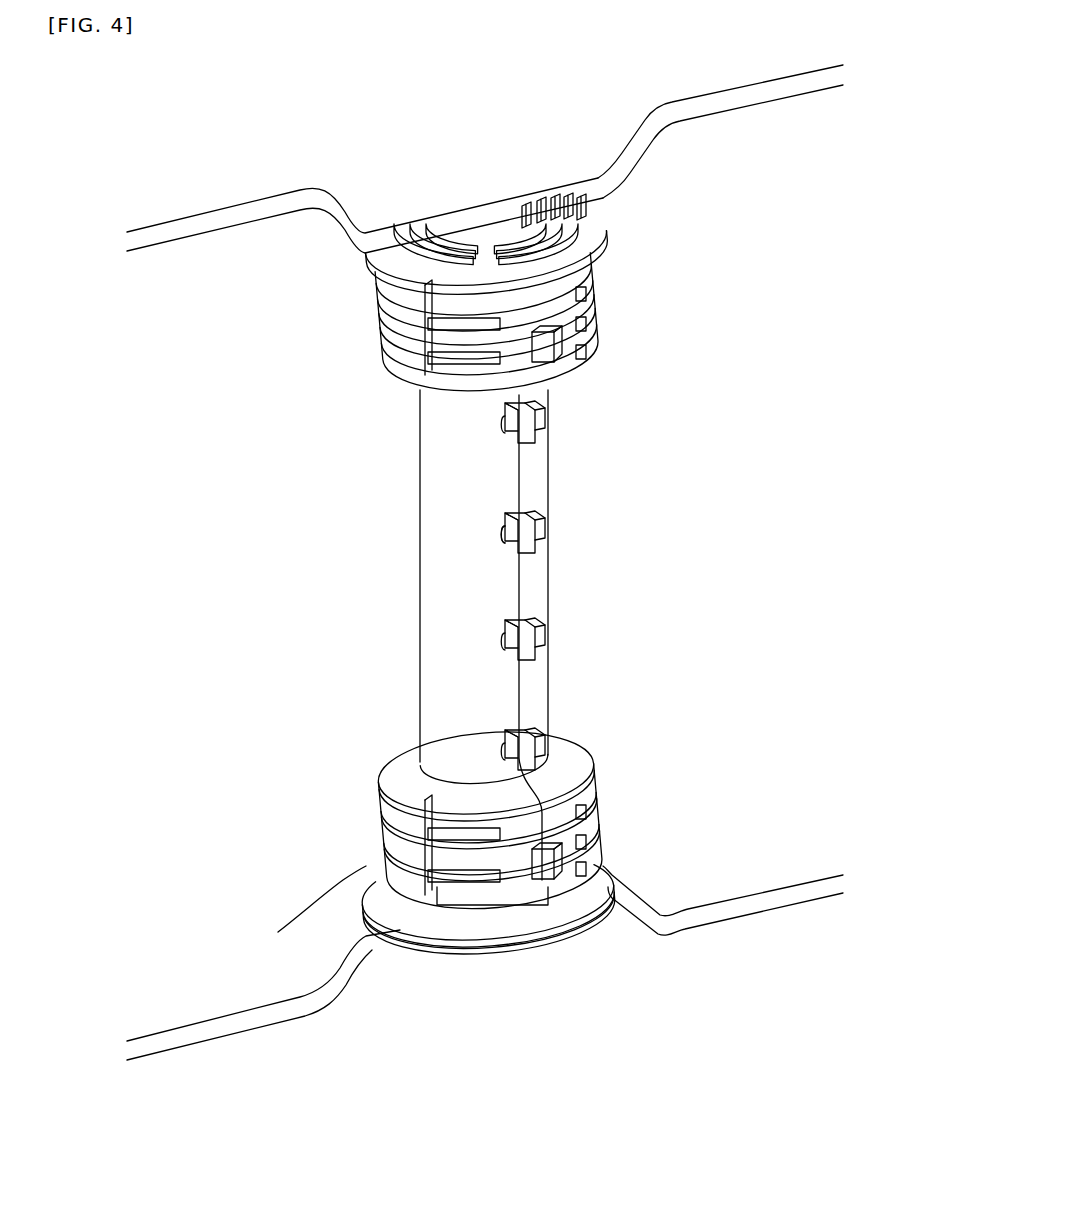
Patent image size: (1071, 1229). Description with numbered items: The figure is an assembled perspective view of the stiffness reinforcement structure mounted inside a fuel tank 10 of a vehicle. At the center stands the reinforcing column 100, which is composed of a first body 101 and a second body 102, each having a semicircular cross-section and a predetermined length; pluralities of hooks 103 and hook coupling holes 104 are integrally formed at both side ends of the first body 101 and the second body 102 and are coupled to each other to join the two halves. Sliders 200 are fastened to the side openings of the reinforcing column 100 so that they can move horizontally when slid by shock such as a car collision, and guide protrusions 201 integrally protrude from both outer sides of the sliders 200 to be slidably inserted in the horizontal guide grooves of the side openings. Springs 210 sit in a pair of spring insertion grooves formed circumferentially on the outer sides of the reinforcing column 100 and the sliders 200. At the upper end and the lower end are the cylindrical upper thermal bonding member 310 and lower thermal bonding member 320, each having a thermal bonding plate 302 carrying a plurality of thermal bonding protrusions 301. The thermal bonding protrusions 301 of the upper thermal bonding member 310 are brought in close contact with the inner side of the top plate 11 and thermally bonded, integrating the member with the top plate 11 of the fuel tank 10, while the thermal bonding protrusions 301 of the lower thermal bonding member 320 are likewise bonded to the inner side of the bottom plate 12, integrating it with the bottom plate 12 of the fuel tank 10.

The fuel tank 10 is at (485, 584).
The top plate 11 is at (243, 212).
The bottom plate 12 is at (231, 1022).
The reinforcing column 100 is at (536, 635).
The first body 101 is at (502, 465).
The second body 102 is at (533, 497).
The hooks 103 is at (500, 536).
The hook coupling holes 104 is at (505, 519).
The sliders 200 is at (479, 632).
The guide protrusions 201 is at (456, 352).
The springs 210 is at (596, 297).
The thermal bonding protrusions 301 is at (612, 233).
The thermal bonding plate 302 is at (598, 228).
The upper thermal bonding member 310 is at (569, 204).
The lower thermal bonding member 320 is at (480, 953).